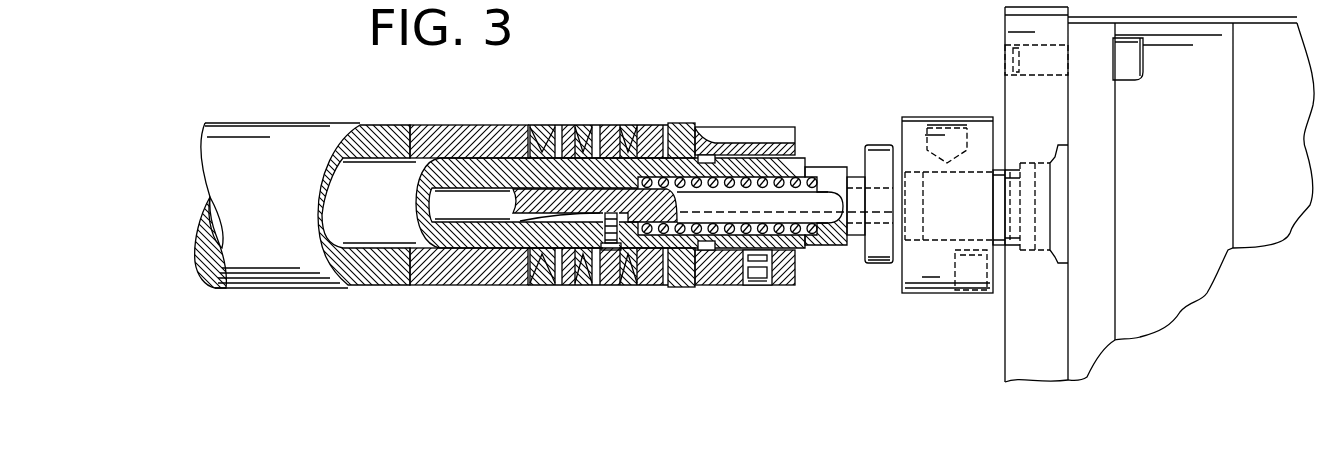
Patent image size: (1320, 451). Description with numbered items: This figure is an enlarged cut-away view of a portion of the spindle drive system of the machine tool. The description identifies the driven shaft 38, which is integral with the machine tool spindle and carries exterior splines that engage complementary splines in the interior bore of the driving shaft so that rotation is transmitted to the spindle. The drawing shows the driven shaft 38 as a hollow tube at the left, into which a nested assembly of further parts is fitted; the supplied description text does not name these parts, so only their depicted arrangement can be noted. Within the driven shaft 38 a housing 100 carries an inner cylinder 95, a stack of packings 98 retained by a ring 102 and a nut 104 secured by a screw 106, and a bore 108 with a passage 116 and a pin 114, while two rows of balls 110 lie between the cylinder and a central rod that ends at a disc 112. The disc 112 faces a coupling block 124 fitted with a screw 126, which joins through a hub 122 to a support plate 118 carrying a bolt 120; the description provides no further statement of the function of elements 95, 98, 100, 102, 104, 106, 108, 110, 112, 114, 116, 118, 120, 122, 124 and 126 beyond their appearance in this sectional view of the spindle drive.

The driven shaft 38 is at (310, 142).
The inner cylinder 95 is at (455, 162).
The seal packing stack 98 is at (641, 126).
The housing 100 is at (436, 270).
The packing retainer ring 102 is at (690, 128).
The packing nut 104 is at (752, 135).
The set screw 106 is at (758, 285).
The piston bore 108 is at (482, 200).
The ball bearings 110 is at (802, 228).
The disc 112 is at (880, 262).
The pin 114 is at (609, 252).
The passage 116 is at (590, 222).
The support plate 118 is at (1177, 285).
The bolt 120 is at (1130, 62).
The hub 122 is at (1028, 175).
The coupling block 124 is at (909, 123).
The screw 126 is at (972, 275).